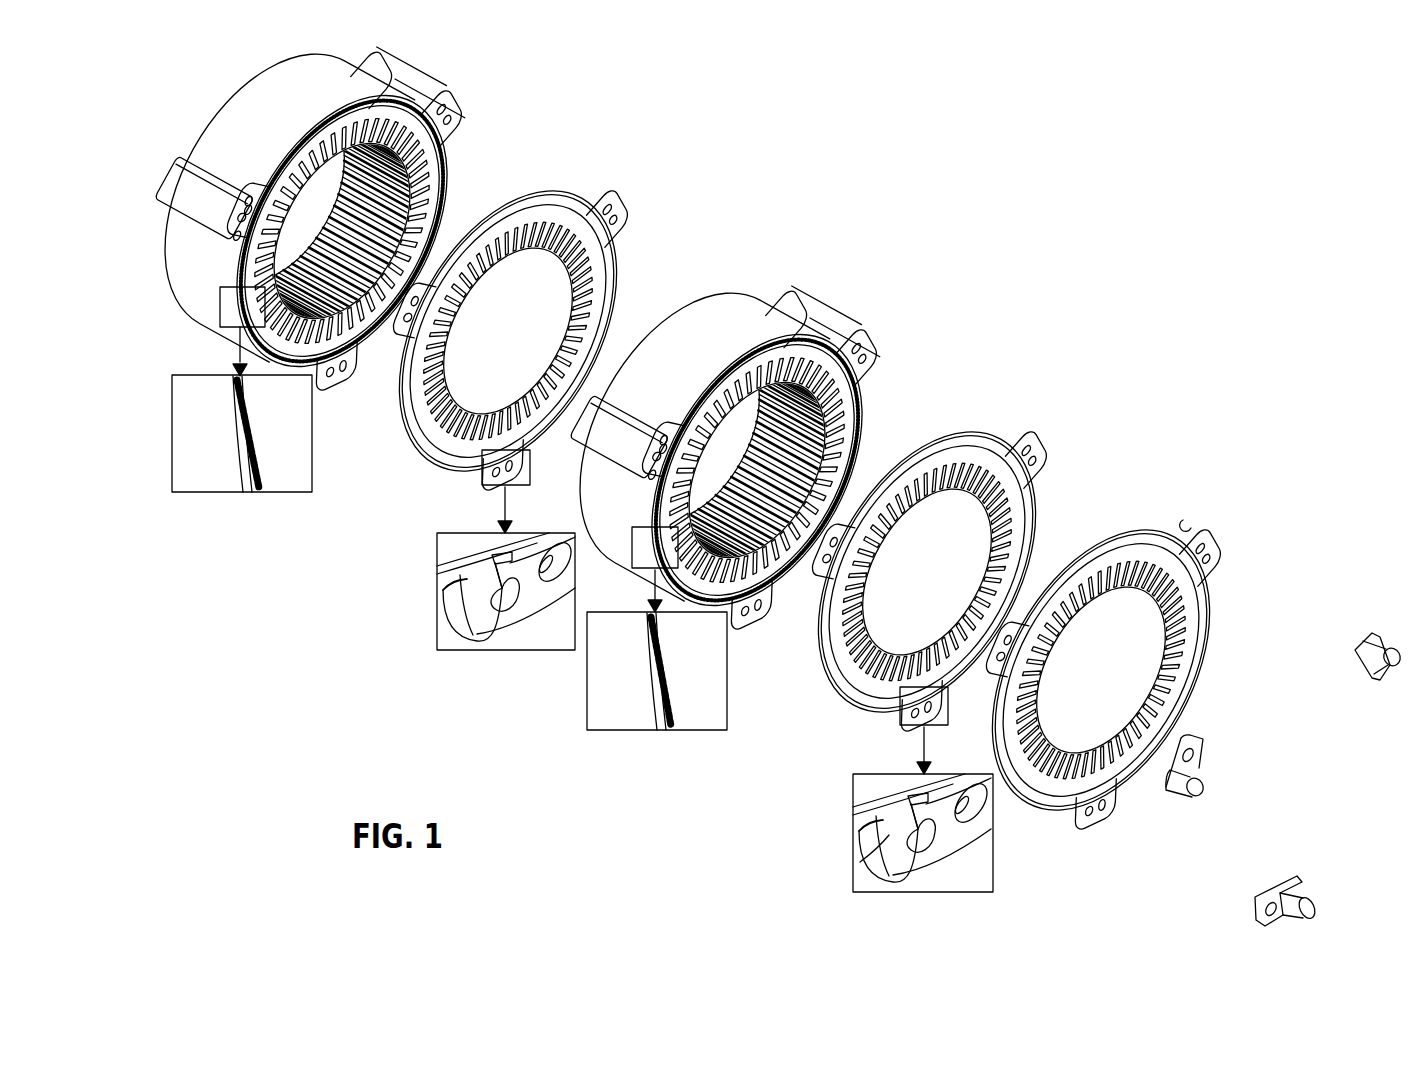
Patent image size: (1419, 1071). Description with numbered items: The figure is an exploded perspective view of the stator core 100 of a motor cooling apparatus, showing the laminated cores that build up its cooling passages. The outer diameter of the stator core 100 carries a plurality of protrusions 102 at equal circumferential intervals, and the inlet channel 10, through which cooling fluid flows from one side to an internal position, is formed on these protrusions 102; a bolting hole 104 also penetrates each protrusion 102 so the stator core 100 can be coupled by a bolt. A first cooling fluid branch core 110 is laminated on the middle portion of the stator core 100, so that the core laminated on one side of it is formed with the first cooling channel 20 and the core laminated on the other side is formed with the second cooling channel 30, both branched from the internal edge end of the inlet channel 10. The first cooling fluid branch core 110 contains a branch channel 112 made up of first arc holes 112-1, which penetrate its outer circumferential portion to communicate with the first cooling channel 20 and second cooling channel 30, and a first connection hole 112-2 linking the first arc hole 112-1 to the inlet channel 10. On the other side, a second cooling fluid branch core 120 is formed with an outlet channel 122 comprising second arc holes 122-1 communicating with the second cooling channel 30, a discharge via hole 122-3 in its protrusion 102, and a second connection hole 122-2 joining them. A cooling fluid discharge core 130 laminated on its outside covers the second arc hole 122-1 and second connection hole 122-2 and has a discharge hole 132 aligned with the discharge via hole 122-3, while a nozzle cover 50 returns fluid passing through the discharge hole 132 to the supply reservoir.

The inlet channel 10 is at (446, 100).
The first cooling channel 20 is at (234, 455).
The second cooling channel 30 is at (640, 695).
The nozzle cover 50 is at (1375, 680).
The stator core 100 is at (175, 284).
The protrusion 102 is at (420, 86).
The bolting hole 104 is at (452, 118).
The first cooling fluid branch core 110 is at (557, 183).
The branch channel 112 is at (426, 591).
The first arc hole 112-1 is at (467, 588).
The first connection hole 112-2 is at (450, 605).
The second cooling fluid branch core 120 is at (977, 424).
The outlet channel 122 is at (845, 833).
The second arc hole 122-1 is at (870, 830).
The second connection hole 122-2 is at (885, 845).
The discharge via hole 122-3 is at (875, 866).
The cooling fluid discharge core 130 is at (1159, 524).
The discharge hole 132 is at (1193, 527).